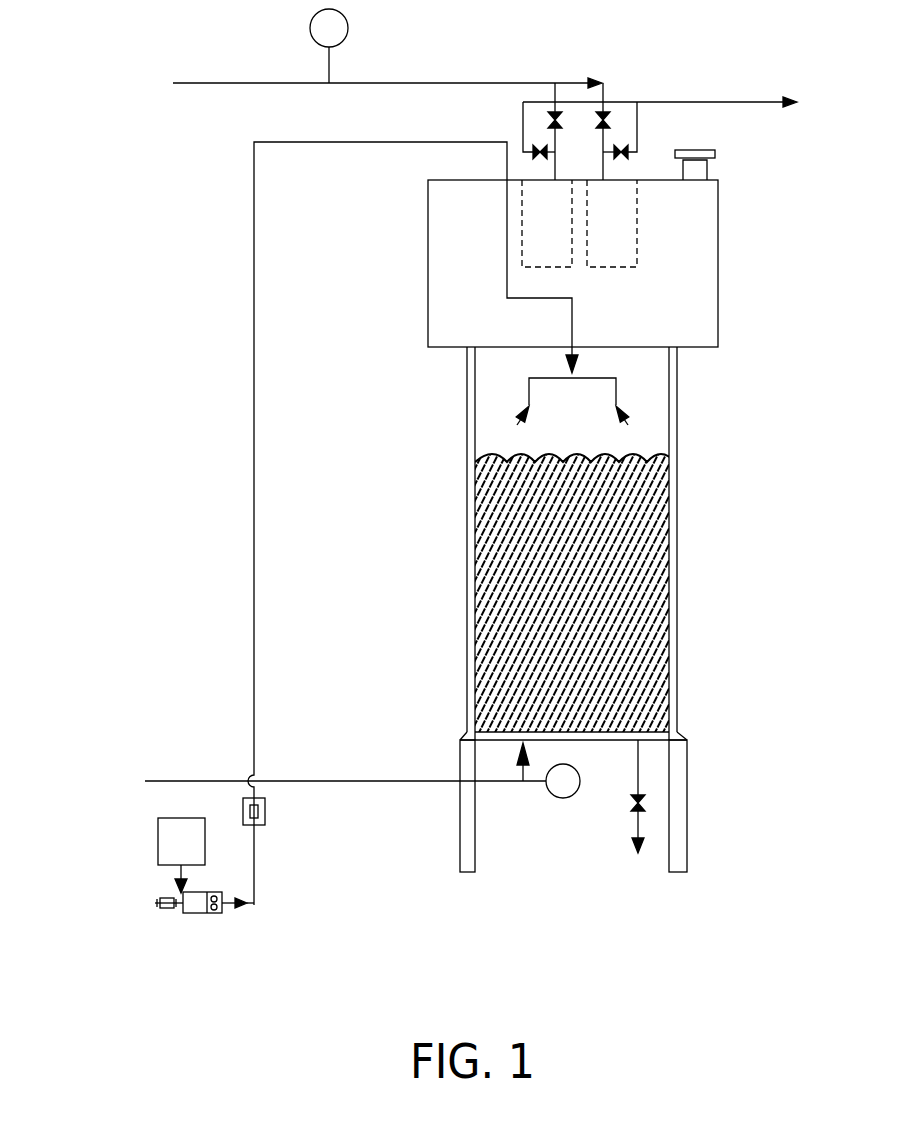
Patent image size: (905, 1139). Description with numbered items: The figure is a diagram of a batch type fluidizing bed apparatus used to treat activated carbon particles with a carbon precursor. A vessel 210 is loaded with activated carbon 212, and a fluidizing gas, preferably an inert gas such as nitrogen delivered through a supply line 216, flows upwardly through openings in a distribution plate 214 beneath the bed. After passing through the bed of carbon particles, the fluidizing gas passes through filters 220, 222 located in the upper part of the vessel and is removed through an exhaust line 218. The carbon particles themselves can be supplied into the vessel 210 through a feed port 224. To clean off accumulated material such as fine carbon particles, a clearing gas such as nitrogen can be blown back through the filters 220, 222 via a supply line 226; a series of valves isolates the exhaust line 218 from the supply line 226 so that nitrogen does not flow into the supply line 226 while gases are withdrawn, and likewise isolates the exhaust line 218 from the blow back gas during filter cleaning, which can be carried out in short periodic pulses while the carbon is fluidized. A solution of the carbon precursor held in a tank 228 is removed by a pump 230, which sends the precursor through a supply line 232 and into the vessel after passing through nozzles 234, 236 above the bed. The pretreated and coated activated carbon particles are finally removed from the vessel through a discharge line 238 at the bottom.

The vessel 210 is at (465, 513).
The activated carbon 212 is at (650, 607).
The distribution plate 214 is at (497, 733).
The supply line 216 is at (188, 777).
The exhaust line 218 is at (736, 100).
The filter 220 is at (529, 253).
The filter 222 is at (594, 253).
The feed port 224 is at (708, 170).
The supply line 226 is at (205, 88).
The tank 228 is at (157, 843).
The pump 230 is at (201, 915).
The supply line 232 is at (253, 607).
The nozzle 234 is at (509, 431).
The nozzle 236 is at (636, 431).
The discharge line 238 is at (633, 768).